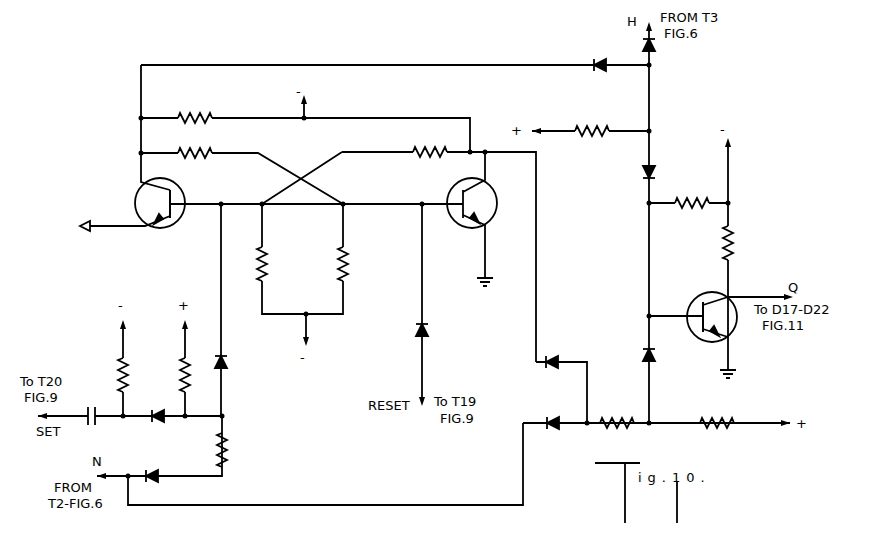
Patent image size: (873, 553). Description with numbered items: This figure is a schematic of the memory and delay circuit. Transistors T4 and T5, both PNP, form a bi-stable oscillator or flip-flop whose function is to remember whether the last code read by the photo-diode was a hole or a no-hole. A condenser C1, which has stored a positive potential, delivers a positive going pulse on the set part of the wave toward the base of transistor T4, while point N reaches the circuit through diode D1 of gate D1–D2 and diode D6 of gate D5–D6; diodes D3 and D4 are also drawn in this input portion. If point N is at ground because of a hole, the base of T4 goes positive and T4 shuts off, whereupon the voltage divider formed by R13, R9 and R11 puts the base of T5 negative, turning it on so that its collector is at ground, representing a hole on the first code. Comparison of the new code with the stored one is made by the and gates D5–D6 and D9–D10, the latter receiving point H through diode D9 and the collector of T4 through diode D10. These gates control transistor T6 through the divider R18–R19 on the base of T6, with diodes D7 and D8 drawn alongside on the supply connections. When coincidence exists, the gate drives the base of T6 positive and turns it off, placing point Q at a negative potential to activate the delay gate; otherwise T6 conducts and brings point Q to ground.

The voltage divider resistor R13 is at (195, 110).
The voltage divider resistor R9 is at (195, 166).
The voltage divider resistor R11 is at (360, 264).
The divider resistor R18 is at (617, 415).
The divider resistor R19 is at (717, 415).
The transistor T4 is at (160, 214).
The transistor T5 is at (479, 205).
The transistor T6 is at (712, 326).
The diode D1 is at (159, 467).
The diode D2 is at (161, 404).
The diode D3 is at (233, 365).
The diode D4 is at (436, 334).
The diode D5 is at (559, 354).
The diode D6 is at (559, 433).
The diode D7 is at (660, 362).
The diode D8 is at (659, 174).
The diode D9 is at (638, 47).
The diode D10 is at (608, 75).
The condenser C1 is at (92, 405).